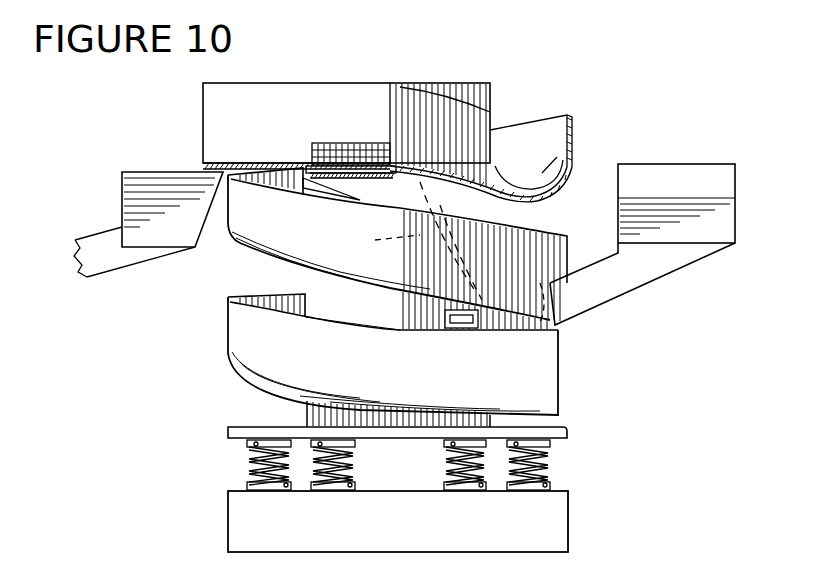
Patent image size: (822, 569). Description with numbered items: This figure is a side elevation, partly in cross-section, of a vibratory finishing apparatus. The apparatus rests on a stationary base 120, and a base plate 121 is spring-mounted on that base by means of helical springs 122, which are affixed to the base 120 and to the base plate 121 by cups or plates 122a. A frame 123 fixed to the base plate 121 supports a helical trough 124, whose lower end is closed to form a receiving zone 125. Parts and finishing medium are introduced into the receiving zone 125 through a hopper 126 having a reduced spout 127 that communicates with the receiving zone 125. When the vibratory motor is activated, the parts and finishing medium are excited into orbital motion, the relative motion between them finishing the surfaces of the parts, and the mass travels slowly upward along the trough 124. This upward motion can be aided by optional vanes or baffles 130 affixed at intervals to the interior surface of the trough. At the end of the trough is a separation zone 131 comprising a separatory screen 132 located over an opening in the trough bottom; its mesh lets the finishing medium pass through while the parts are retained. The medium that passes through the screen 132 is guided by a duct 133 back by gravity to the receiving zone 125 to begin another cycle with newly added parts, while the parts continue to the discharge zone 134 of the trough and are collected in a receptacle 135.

The stationary base 120 is at (568, 503).
The base plate 121 is at (567, 432).
The helical springs 122 is at (553, 462).
The cups or plates 122a is at (240, 436).
The frame 123 is at (305, 403).
The helical trough 124 is at (226, 330).
The receiving zone 125 is at (545, 372).
The hopper 126 is at (712, 228).
The reduced spout 127 is at (604, 294).
The vanes or baffles 130 is at (543, 178).
The separation zone 131 is at (383, 104).
The separatory screen 132 is at (334, 168).
The duct 133 is at (368, 182).
The discharge zone 134 is at (255, 110).
The receptacle 135 is at (132, 203).